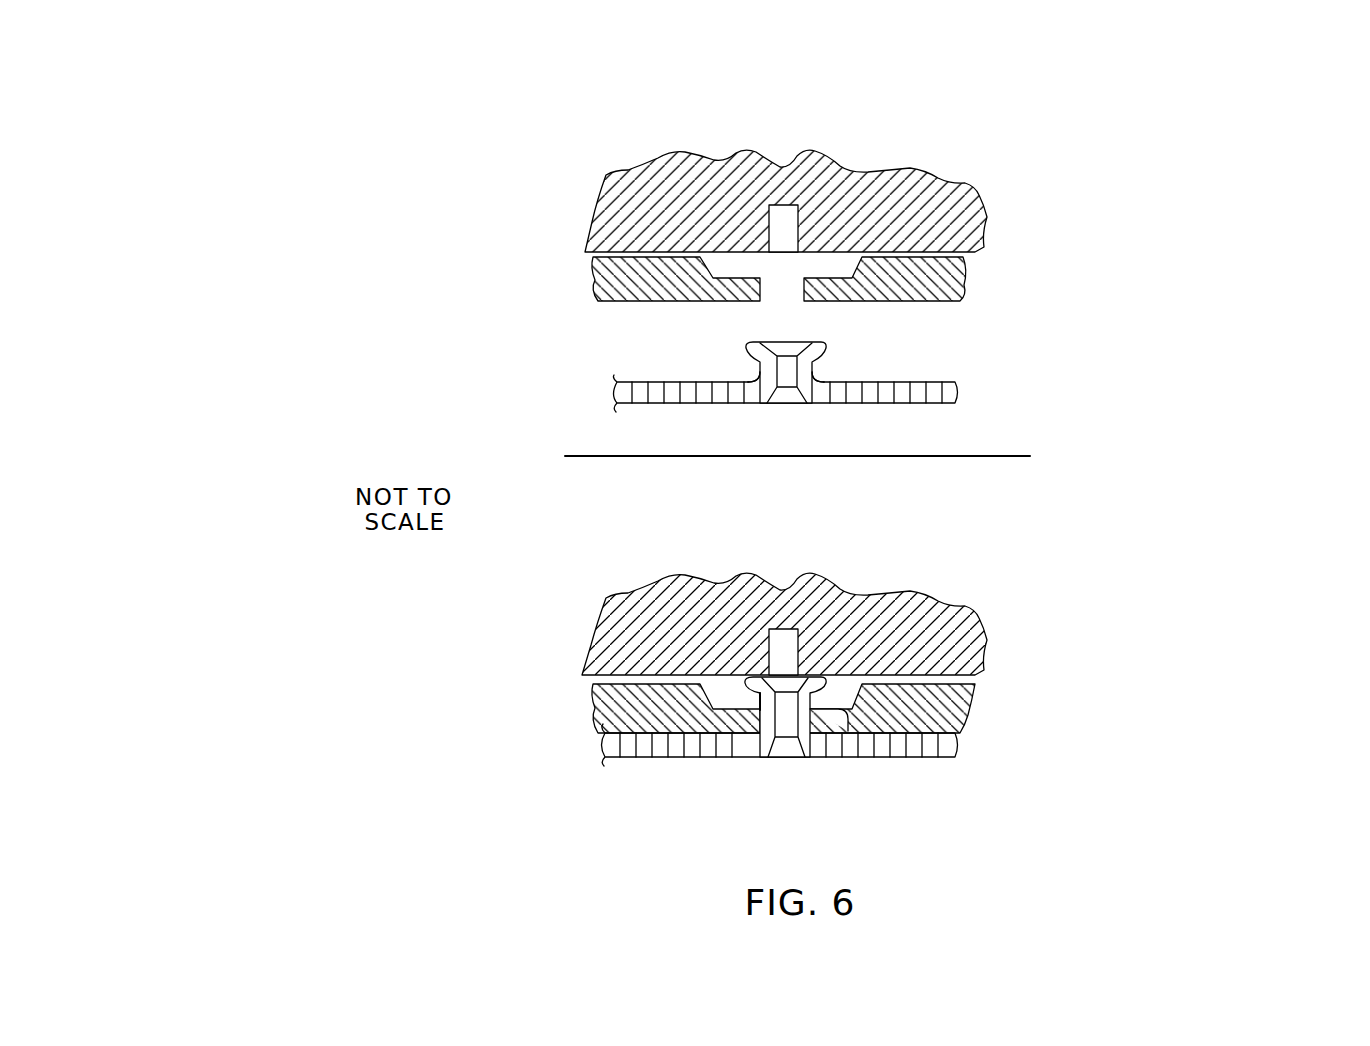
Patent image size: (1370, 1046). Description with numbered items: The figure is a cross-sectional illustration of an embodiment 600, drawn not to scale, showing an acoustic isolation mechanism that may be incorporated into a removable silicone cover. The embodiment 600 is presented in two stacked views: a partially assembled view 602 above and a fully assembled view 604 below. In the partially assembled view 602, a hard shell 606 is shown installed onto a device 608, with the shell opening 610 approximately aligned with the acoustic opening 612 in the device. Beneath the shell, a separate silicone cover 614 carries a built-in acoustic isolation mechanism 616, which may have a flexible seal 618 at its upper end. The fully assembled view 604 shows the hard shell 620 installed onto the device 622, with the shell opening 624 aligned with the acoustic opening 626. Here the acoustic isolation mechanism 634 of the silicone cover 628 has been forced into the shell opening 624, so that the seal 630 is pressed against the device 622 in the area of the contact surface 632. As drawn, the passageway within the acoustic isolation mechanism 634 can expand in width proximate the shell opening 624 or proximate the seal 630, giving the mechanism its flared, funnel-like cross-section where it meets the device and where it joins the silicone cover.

The embodiment 600 is at (480, 245).
The partially assembled view 602 is at (1204, 170).
The fully assembled view 604 is at (1204, 561).
The hard shell 606 is at (975, 278).
The device 608 is at (985, 205).
The shell opening 610 is at (760, 282).
The acoustic opening 612 is at (783, 228).
The silicone cover 614 is at (957, 392).
The acoustic isolation mechanism 616 is at (823, 343).
The flexible seal 618 is at (760, 348).
The hard shell 620 is at (976, 702).
The device 622 is at (985, 629).
The shell opening 624 is at (758, 732).
The acoustic opening 626 is at (783, 652).
The silicone cover 628 is at (958, 745).
The seal 630 is at (826, 684).
The contact surface 632 is at (760, 700).
The acoustic isolation mechanism 634 is at (753, 680).